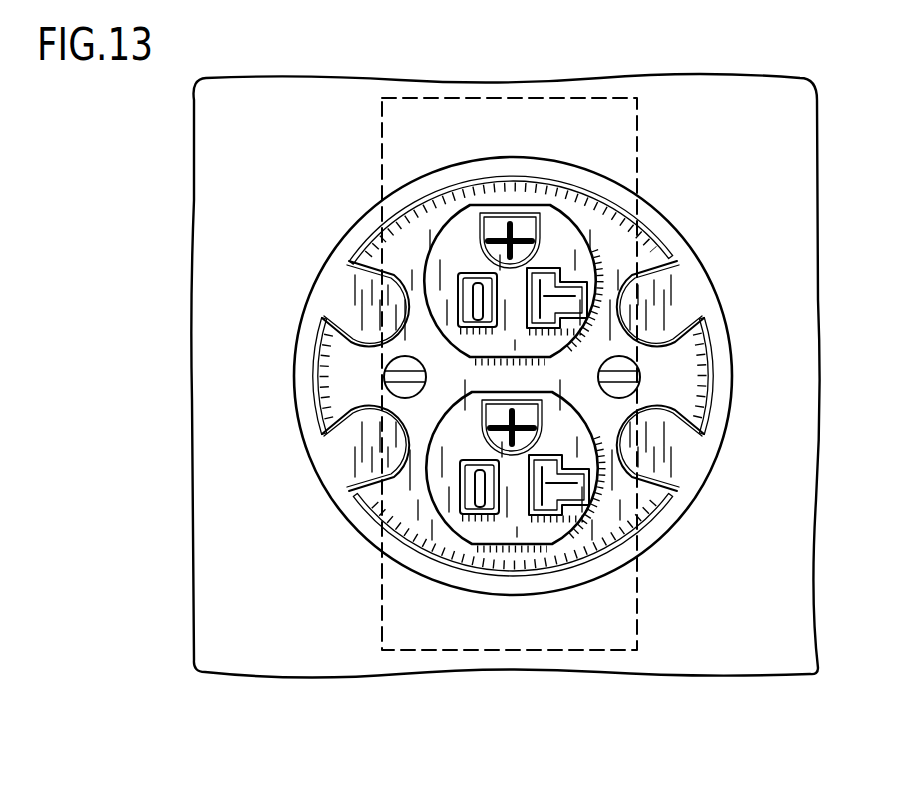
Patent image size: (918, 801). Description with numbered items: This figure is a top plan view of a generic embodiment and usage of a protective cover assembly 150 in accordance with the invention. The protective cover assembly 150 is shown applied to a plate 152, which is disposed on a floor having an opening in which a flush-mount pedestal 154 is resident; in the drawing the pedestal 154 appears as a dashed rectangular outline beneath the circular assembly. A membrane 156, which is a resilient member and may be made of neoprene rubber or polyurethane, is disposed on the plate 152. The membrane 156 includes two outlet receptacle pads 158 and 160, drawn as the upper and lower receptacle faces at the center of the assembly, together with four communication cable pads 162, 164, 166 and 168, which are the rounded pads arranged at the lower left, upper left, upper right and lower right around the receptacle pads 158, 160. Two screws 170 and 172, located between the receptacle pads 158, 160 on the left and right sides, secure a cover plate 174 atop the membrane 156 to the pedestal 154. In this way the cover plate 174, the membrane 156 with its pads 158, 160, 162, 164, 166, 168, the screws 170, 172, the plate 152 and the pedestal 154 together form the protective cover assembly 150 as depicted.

The protective cover assembly 150 is at (724, 266).
The plate 152 is at (737, 95).
The flush-mount pedestal 154 is at (588, 122).
The membrane 156 is at (699, 504).
The outlet receptacle pad 158 is at (580, 230).
The outlet receptacle pad 160 is at (600, 508).
The communication cable pad 162 is at (380, 492).
The communication cable pad 164 is at (343, 357).
The communication cable pad 166 is at (688, 340).
The communication cable pad 168 is at (680, 418).
The screw 170 is at (384, 387).
The screw 172 is at (627, 388).
The cover plate 174 is at (428, 535).